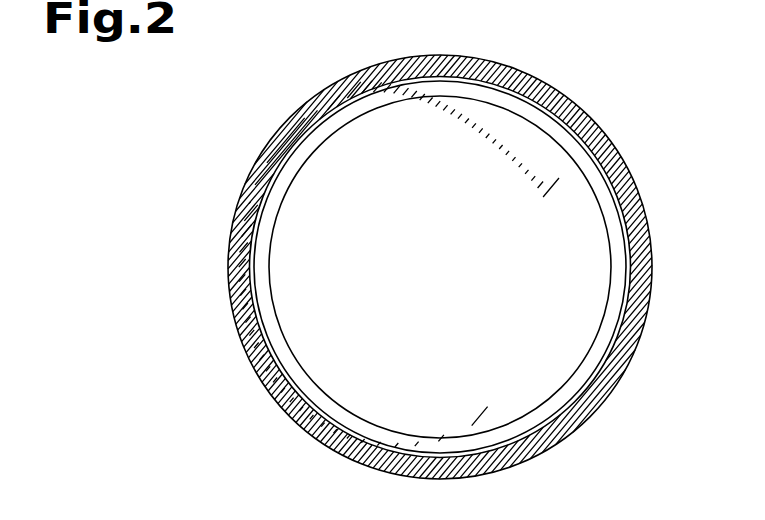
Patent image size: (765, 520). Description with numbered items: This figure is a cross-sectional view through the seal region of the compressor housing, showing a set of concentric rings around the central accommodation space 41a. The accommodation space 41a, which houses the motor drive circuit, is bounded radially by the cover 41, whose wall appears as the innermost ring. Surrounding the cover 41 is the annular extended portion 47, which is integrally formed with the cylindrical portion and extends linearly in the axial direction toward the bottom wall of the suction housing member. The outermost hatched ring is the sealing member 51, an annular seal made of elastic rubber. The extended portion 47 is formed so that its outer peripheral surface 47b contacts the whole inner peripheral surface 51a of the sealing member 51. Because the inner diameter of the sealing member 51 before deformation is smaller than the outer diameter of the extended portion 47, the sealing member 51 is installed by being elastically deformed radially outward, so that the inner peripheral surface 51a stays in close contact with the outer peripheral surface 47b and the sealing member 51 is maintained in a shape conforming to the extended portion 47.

The sealing member 51 is at (577, 97).
The inner peripheral surface of the sealing member 51a is at (422, 92).
The extended portion 47 is at (597, 177).
The outer peripheral surface of the extended portion 47b is at (287, 142).
The cover 41 is at (285, 190).
The accommodation space 41a is at (468, 282).